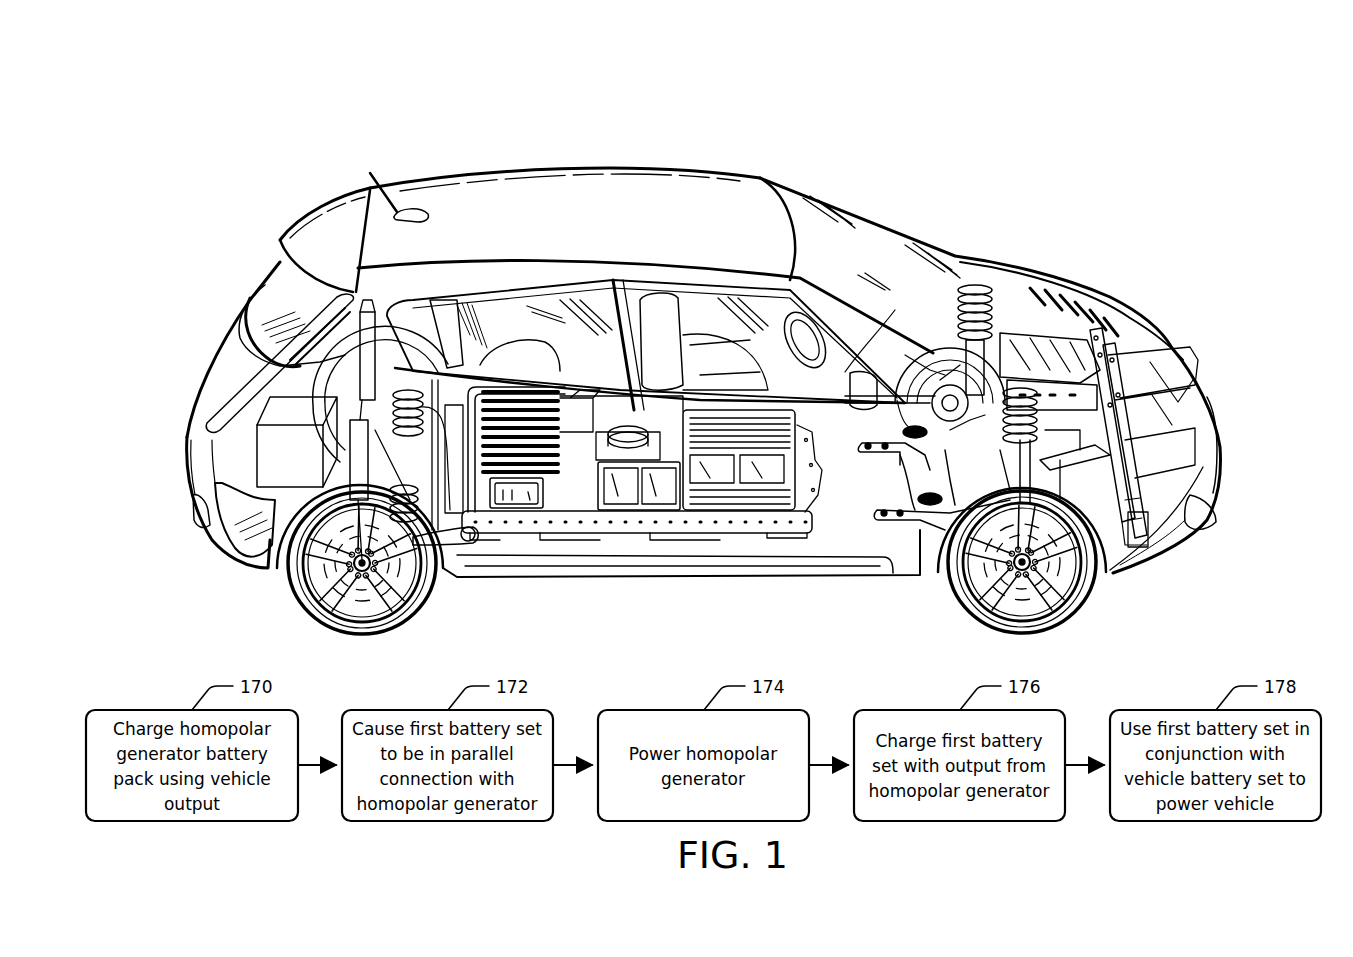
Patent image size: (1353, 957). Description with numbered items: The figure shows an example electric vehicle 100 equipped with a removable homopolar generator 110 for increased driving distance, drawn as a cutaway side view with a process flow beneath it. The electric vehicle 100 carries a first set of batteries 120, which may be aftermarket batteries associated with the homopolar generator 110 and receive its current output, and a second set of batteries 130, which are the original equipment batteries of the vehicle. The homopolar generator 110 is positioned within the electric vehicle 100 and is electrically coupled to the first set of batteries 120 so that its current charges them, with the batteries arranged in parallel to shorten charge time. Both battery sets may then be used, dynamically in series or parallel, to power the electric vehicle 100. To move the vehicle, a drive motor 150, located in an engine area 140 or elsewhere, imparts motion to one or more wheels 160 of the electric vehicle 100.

The electric vehicle 100 is at (697, 351).
The homopolar generator 110 is at (250, 441).
The first set of batteries 120 is at (513, 524).
The second set of batteries 130 is at (746, 524).
The engine area 140 is at (1150, 293).
The drive motor 150 is at (1154, 469).
The wheels 160 is at (1114, 592).